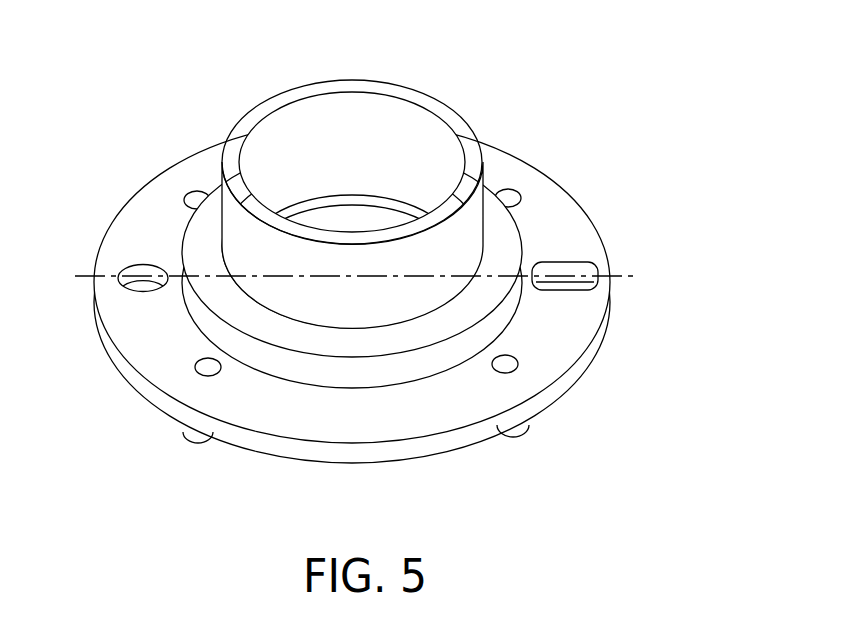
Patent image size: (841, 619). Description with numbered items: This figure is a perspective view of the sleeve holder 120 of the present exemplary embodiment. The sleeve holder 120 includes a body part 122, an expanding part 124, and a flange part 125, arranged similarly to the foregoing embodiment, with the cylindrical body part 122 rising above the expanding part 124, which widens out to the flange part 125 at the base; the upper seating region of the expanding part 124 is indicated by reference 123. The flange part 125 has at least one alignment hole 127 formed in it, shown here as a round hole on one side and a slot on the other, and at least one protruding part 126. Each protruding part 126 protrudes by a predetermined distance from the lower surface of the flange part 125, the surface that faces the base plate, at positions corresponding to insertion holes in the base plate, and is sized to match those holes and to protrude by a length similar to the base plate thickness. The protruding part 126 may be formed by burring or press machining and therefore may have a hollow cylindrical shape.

The sleeve holder 120 is at (374, 269).
The body part 122 is at (477, 223).
The seating surface of boss 123 is at (510, 258).
The expanding part 124 is at (433, 363).
The flange part 125 is at (545, 347).
The protruding part 126 is at (195, 437).
The alignment hole 127 is at (140, 272).